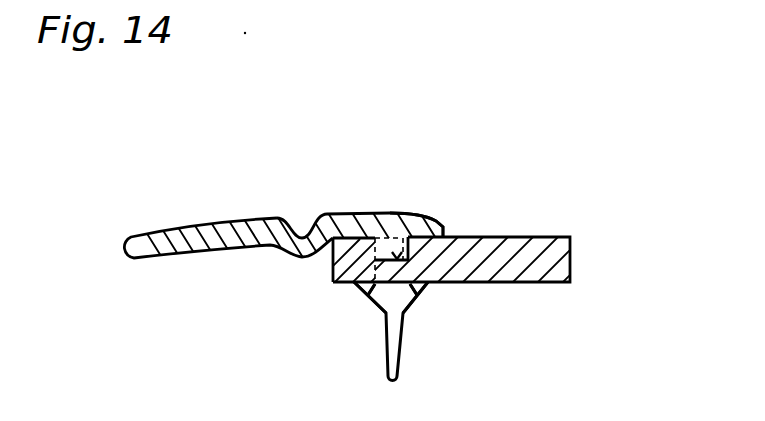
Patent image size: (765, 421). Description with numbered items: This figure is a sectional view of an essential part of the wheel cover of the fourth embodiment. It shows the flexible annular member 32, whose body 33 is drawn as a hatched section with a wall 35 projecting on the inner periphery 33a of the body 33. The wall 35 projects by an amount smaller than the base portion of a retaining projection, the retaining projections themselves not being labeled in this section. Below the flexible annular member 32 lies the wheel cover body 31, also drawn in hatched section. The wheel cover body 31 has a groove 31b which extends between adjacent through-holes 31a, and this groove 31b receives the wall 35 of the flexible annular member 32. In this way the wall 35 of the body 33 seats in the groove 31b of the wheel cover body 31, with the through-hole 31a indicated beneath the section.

The wheel cover body 31 is at (538, 237).
The through-hole 31a is at (399, 287).
The groove 31b is at (397, 256).
The flexible annular member 32 is at (208, 231).
The body 33 is at (357, 213).
The inner periphery 33a is at (432, 220).
The wall 35 is at (378, 305).